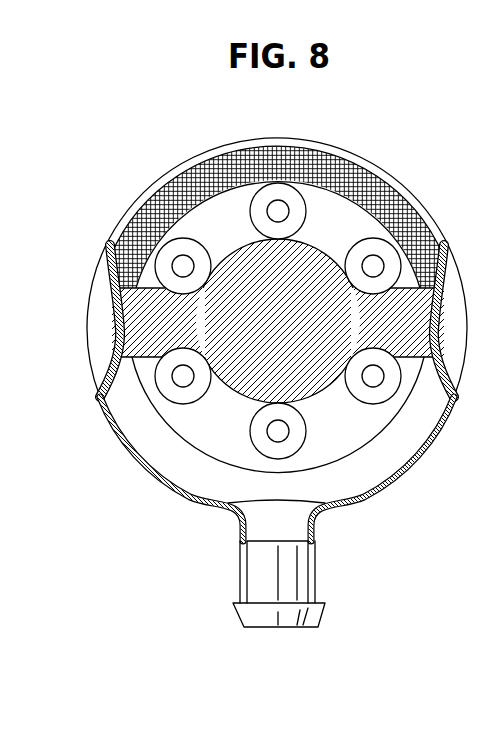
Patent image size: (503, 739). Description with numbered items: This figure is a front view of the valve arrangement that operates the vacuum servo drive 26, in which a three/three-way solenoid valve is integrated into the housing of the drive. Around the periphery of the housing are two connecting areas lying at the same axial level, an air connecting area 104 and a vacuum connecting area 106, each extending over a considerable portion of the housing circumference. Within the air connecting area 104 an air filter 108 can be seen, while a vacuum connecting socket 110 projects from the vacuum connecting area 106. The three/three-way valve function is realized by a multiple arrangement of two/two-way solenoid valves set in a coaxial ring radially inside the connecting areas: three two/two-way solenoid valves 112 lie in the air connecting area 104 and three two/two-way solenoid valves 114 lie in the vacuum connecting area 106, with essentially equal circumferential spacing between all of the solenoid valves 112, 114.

The vacuum servo drive 26 is at (447, 208).
The air connecting area 104 is at (222, 146).
The vacuum connecting area 106 is at (384, 460).
The air filter 108 is at (299, 158).
The vacuum connecting socket 110 is at (294, 568).
The 2/2-way solenoid valves 112 is at (176, 264).
The 2/2-way solenoid valves 114 is at (390, 388).